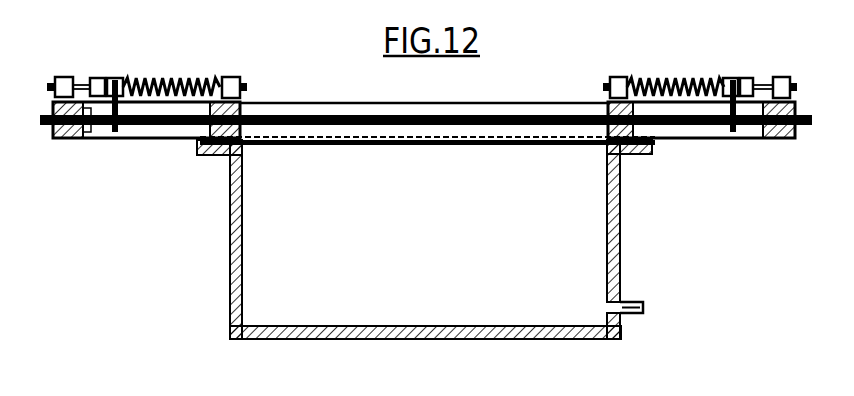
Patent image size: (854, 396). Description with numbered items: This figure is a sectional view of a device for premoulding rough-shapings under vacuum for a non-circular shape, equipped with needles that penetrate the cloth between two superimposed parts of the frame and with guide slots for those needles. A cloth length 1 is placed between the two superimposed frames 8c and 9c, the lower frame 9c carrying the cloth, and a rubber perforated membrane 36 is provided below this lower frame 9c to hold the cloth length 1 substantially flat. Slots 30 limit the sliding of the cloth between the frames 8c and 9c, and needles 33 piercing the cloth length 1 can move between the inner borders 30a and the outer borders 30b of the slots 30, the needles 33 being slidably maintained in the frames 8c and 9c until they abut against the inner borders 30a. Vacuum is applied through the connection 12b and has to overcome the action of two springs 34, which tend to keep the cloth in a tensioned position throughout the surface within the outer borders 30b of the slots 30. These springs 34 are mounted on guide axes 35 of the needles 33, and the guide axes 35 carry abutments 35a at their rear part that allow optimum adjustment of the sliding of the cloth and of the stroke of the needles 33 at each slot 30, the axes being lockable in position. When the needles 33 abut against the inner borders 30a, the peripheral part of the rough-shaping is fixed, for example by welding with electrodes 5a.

The cloth length 1 is at (327, 115).
The electrodes 5a is at (243, 112).
The upper frame 8c is at (68, 138).
The lower frame 9c is at (73, 138).
The connection 12b is at (640, 302).
The slots 30 is at (168, 138).
The inner borders 30a is at (203, 156).
The outer borders 30b is at (102, 137).
The needles 33 is at (120, 77).
The springs 34 is at (200, 77).
The guide axes 35 is at (80, 76).
The abutments 35a is at (100, 77).
The rubber perforated membrane 36 is at (525, 137).